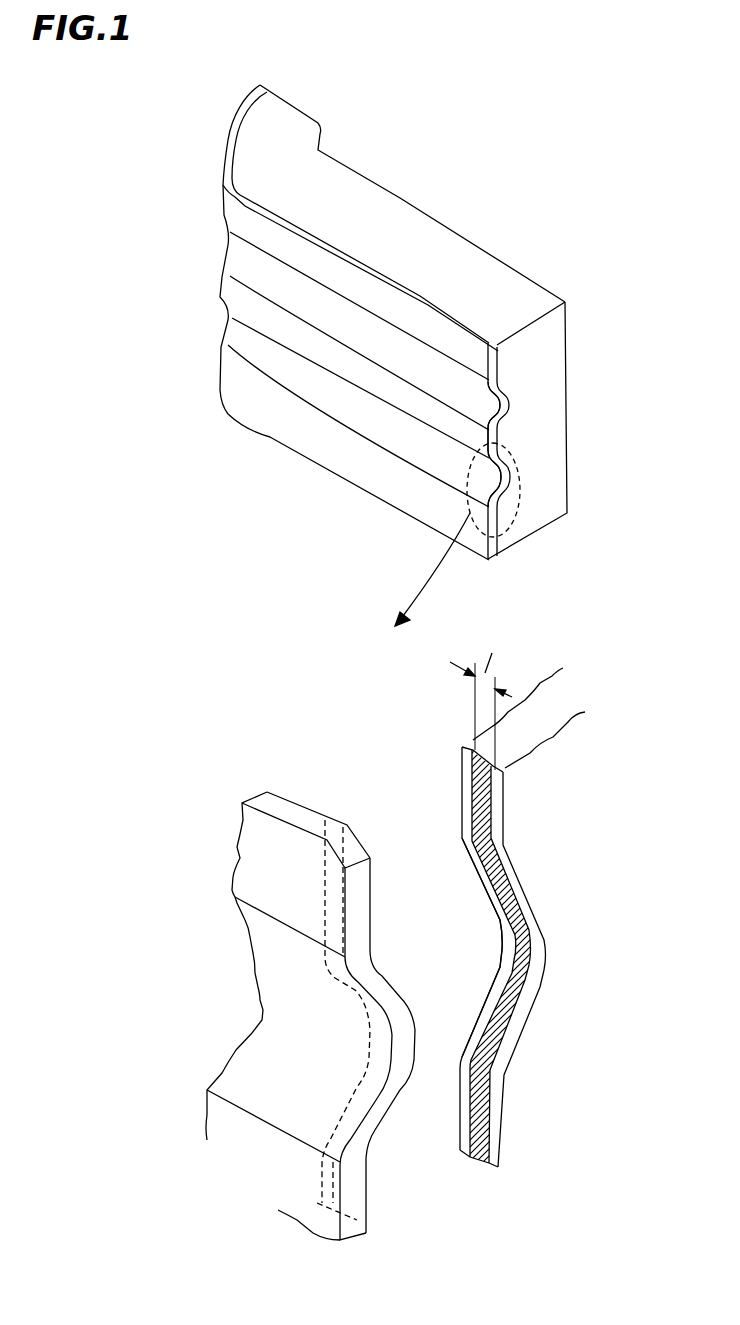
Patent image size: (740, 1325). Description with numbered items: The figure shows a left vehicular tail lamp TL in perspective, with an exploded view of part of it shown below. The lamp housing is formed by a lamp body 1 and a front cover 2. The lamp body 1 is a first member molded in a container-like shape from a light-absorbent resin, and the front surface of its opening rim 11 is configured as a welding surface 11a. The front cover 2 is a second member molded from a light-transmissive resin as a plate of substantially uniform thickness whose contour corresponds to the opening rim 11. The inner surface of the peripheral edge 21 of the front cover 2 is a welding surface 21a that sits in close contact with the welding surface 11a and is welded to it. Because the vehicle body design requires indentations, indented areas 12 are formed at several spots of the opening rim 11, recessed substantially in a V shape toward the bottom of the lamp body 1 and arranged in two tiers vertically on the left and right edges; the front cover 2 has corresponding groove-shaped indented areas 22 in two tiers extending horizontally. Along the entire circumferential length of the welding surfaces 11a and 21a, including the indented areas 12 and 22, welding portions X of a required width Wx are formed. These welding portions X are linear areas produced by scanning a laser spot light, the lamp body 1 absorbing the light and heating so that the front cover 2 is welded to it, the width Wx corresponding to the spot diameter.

The tail lamp TL is at (473, 219).
The lamp body 1 is at (552, 370).
The front cover 2 is at (282, 436).
The opening rim 11 is at (502, 542).
The welding surface 11a is at (497, 847).
The indented areas 12 is at (512, 410).
The peripheral edge 21 is at (478, 548).
The welding surface 21a is at (380, 1138).
The indented areas 22 is at (415, 373).
The welding portions X is at (328, 818).
The width Wx is at (483, 699).